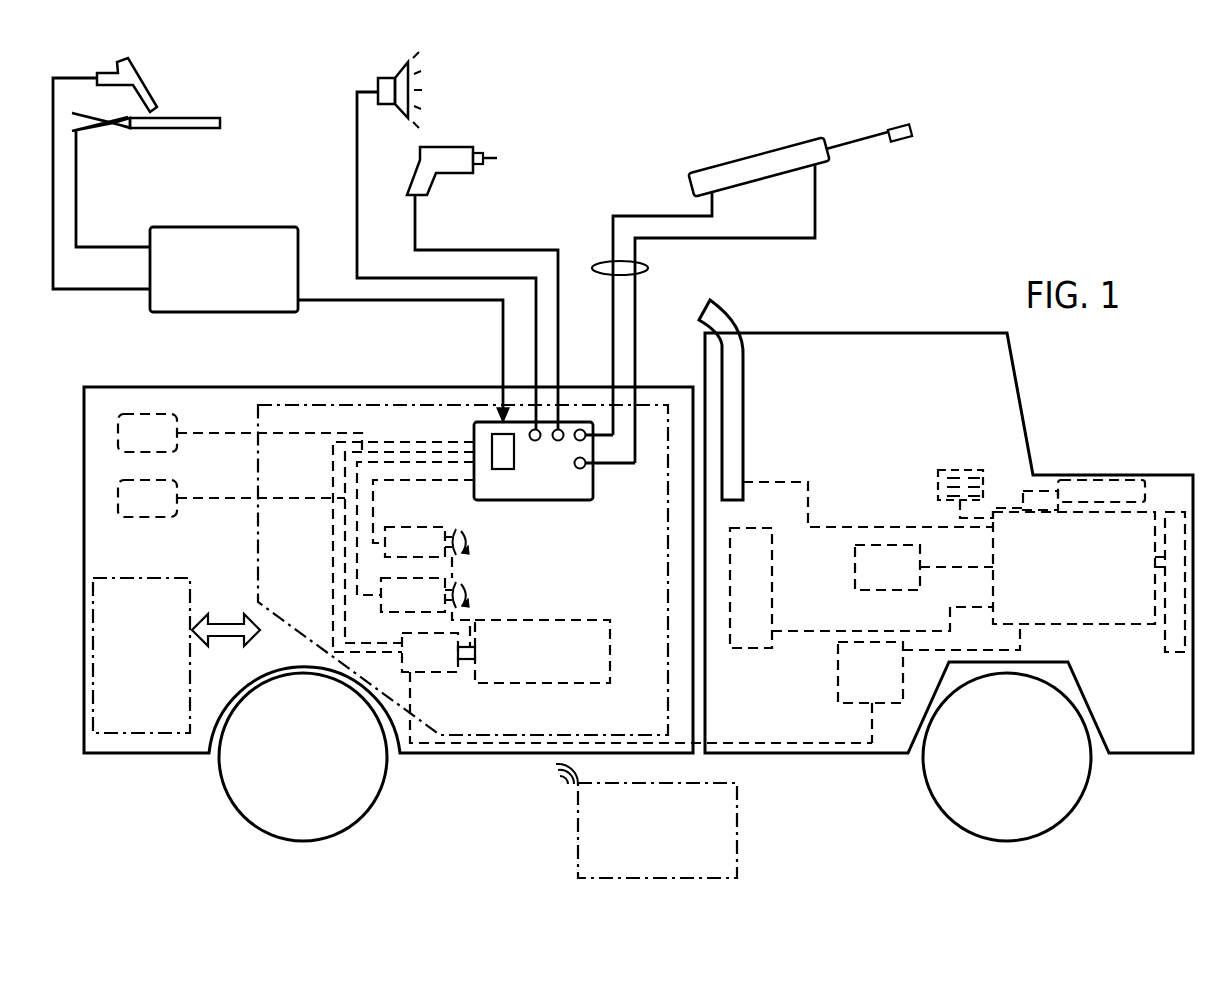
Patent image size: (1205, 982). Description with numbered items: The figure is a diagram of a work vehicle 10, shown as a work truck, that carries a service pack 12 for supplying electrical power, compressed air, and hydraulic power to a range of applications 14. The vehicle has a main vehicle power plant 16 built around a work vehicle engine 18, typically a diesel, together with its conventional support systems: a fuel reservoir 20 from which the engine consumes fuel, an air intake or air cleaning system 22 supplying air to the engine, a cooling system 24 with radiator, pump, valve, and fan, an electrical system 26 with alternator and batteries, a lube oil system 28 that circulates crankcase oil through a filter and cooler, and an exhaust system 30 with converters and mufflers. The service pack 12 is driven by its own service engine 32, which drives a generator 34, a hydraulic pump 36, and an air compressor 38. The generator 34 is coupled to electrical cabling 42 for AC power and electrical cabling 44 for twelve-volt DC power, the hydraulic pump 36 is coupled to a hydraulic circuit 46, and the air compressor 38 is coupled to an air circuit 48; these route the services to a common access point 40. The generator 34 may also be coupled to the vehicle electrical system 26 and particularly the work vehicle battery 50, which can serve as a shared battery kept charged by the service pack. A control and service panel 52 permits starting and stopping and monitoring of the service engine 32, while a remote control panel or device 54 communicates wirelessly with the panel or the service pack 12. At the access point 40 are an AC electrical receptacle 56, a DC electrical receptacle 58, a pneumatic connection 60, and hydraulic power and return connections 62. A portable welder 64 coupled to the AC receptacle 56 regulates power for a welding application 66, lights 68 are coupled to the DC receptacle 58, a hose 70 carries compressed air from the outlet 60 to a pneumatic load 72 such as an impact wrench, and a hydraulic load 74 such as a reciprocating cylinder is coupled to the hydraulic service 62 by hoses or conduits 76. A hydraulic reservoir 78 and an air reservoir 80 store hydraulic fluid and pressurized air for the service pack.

The work vehicle 10 is at (150, 773).
The service pack 12 is at (257, 561).
The applications 14 is at (846, 208).
The main vehicle power plant 16 is at (1043, 410).
The work vehicle engine 18 is at (1072, 621).
The fuel reservoir 20 is at (762, 650).
The air intake or air cleaning system 22 is at (1077, 482).
The cooling system 24 is at (1180, 655).
The electrical system 26 is at (937, 485).
The lube oil system 28 is at (855, 558).
The exhaust system 30 is at (742, 422).
The service engine 32 is at (535, 620).
The generator 34 is at (428, 673).
The hydraulic pump 36 is at (411, 612).
The air compressor 38 is at (400, 527).
The access point 40 is at (563, 501).
The electrical cabling 42 is at (340, 588).
The electrical cabling 44 is at (345, 625).
The hydraulic circuit 46 is at (352, 542).
The air circuit 48 is at (370, 493).
The work vehicle battery 50 is at (838, 686).
The control and service panel 52 is at (147, 578).
The remote control panel or device 54 is at (738, 828).
The AC electrical receptacle 56 is at (490, 441).
The DC electrical receptacle 58 is at (532, 428).
The pneumatic connection 60 is at (561, 428).
The hydraulic power and return connections 62 is at (586, 468).
The portable welder 64 is at (237, 226).
The welding application 66 is at (193, 116).
The lights 68 is at (380, 80).
The hose 70 is at (490, 250).
The pneumatic load 72 is at (455, 147).
The hydraulic load 74 is at (758, 160).
The hoses or conduits 76 is at (600, 265).
The hydraulic reservoir 78 is at (165, 452).
The air reservoir 80 is at (148, 517).